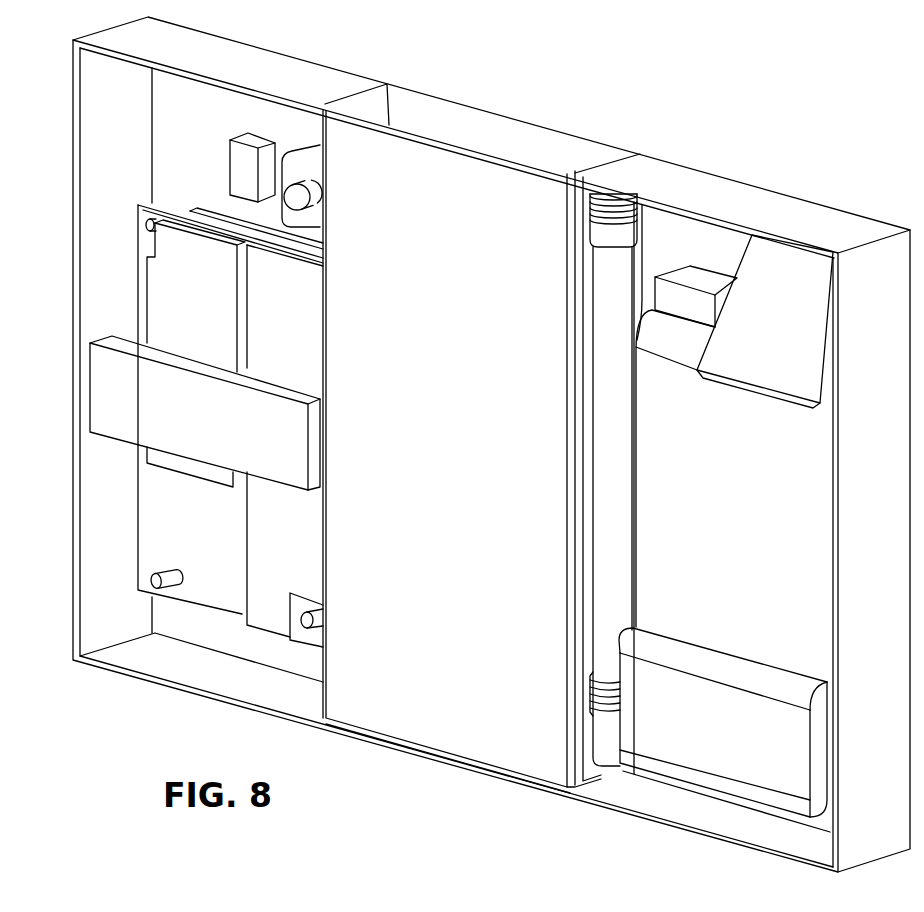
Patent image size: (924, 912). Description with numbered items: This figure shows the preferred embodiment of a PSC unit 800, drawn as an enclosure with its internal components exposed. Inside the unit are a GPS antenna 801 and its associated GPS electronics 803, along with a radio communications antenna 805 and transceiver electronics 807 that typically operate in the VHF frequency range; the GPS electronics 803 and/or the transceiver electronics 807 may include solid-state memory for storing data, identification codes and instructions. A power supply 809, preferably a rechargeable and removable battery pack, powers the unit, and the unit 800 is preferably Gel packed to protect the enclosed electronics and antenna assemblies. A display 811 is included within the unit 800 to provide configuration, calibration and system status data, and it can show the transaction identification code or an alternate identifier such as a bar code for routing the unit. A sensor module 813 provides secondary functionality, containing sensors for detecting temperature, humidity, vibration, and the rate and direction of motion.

The PSC unit 800 is at (725, 122).
The GPS antenna 801 is at (753, 343).
The GPS electronics 803 is at (261, 338).
The radio communications antenna 805 is at (623, 493).
The transceiver electronics 807 is at (170, 316).
The power supply 809 is at (688, 738).
The display 811 is at (181, 433).
The sensor module 813 is at (303, 196).